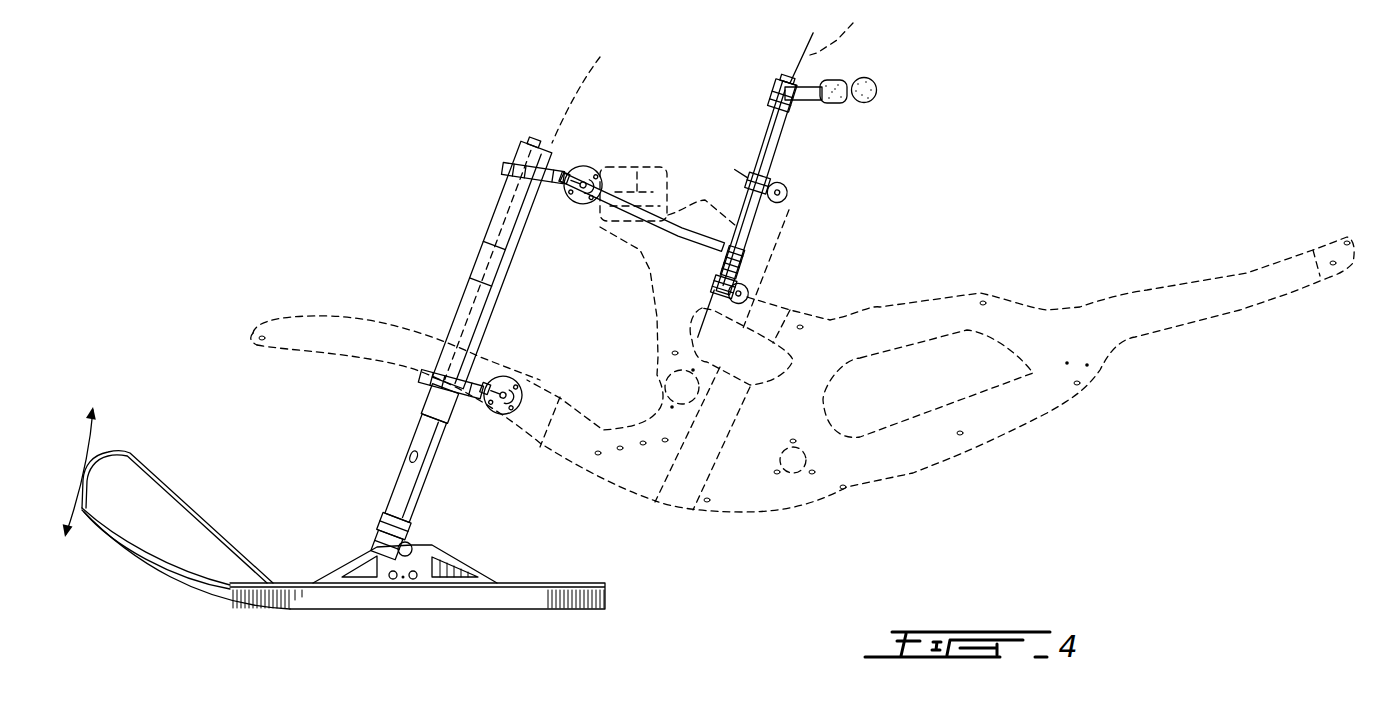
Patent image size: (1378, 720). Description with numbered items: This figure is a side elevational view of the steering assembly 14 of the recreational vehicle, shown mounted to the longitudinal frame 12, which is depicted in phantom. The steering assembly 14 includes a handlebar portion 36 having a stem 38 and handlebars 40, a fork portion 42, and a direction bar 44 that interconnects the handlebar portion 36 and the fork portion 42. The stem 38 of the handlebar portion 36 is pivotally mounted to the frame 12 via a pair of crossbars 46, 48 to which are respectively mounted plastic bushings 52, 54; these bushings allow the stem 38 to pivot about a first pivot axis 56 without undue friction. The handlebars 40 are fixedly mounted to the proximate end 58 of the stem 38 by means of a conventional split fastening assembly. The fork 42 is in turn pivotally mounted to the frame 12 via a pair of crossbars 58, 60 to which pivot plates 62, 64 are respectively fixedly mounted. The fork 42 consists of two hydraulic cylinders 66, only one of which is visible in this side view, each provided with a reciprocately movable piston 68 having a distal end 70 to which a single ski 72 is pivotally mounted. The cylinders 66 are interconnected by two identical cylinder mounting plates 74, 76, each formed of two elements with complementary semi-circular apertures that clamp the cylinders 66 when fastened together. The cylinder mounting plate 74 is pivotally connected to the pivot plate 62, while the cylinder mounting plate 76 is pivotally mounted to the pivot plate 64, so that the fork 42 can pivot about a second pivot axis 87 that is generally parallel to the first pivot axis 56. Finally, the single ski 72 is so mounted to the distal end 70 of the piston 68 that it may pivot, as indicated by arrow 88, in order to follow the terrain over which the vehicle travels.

The longitudinal frame 12 is at (746, 513).
The steering assembly 14 is at (432, 223).
The handlebar portion 36 is at (773, 103).
The stem 38 is at (776, 150).
The handlebars 40 is at (807, 90).
The fork portion 42 is at (497, 206).
The direction bar 44 is at (677, 200).
The crossbar 46 is at (789, 194).
The crossbar 48 is at (750, 291).
The plastic bushing 52 is at (747, 176).
The plastic bushing 54 is at (710, 288).
The first pivot axis 56 is at (851, 29).
The crossbar 58 is at (590, 168).
The crossbar 60 is at (514, 380).
The pivot plate 62 is at (563, 178).
The pivot plate 64 is at (483, 374).
The hydraulic cylinder 66 is at (497, 290).
The piston 68 is at (430, 443).
The distal end 70 is at (380, 520).
The single ski 72 is at (322, 600).
The cylinder mounting plate 74 is at (505, 162).
The cylinder mounting plate 76 is at (430, 374).
The second pivot axis 87 is at (592, 86).
The arrow 88 is at (72, 466).